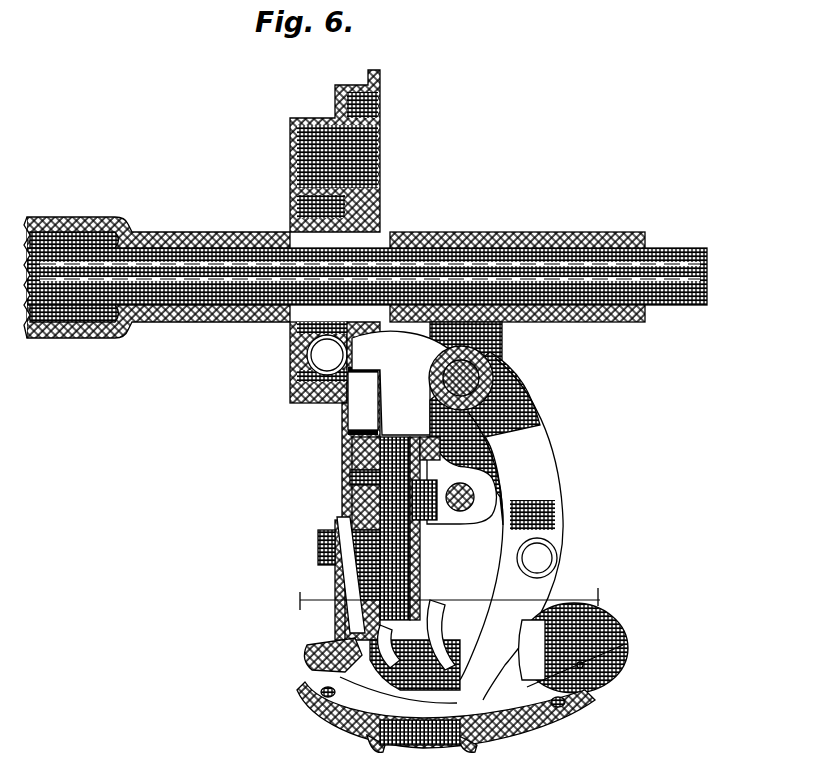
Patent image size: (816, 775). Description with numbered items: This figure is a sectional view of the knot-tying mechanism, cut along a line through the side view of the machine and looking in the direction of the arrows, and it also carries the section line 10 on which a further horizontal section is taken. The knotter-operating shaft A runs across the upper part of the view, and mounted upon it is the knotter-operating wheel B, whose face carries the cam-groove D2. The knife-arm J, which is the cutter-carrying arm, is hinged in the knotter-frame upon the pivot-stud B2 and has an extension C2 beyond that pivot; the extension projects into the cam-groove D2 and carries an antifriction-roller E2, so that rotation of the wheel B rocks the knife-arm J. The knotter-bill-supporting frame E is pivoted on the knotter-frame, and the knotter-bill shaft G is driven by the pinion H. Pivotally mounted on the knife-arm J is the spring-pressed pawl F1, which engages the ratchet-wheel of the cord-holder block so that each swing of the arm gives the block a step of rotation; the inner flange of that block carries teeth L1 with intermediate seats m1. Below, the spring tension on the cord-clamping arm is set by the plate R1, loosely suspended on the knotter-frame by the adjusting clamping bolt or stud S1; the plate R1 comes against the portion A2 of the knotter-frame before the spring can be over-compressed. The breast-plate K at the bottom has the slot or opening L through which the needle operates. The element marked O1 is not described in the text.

The knotter-operating shaft A is at (135, 255).
The knotter-operating wheel B is at (290, 122).
The extension of the knife-arm C2 is at (398, 355).
The cam-groove D2 is at (308, 350).
The antifriction-roller E2 is at (303, 375).
The pivot-stud B2 is at (500, 368).
The knife-arm J is at (535, 420).
The pinion H is at (540, 442).
The spring-pressed pawl F1 is at (475, 496).
The knotter-bill-supporting frame E is at (478, 510).
The knotter-bill shaft G is at (385, 495).
The portion of the knotter-frame A2 is at (340, 545).
The adjusting clamping bolt or stud S1 is at (318, 542).
The plate R1 is at (338, 567).
The section line 10 10 is at (448, 599).
The wedge O1 is at (345, 637).
The teeth of the cord-holder block flange L1 is at (440, 578).
The seats of the cord-holder block flange m1 is at (590, 688).
The breast-plate K is at (540, 742).
The slot or opening in the breast-plate L is at (423, 742).